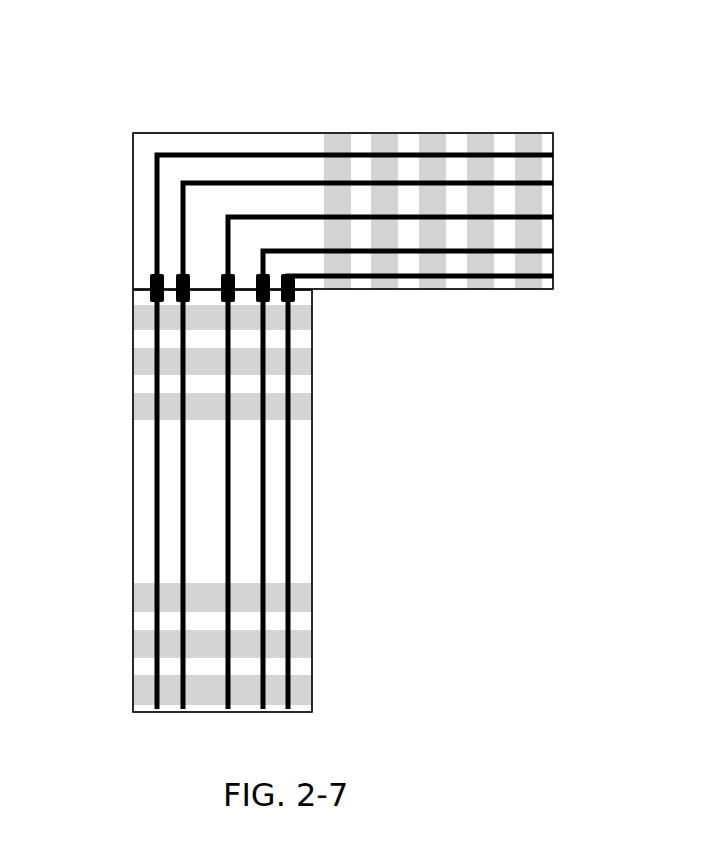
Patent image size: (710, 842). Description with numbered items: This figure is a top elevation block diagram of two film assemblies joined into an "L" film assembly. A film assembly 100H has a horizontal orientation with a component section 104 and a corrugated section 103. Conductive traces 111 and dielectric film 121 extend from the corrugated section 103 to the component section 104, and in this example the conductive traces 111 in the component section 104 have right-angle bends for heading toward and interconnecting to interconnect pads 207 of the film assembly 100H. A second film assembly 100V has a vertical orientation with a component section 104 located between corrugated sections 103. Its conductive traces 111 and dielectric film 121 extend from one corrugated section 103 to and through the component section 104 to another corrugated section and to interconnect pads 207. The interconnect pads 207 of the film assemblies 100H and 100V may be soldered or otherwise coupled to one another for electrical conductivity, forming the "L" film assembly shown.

The film assembly 100H is at (586, 112).
The film assembly 100V is at (334, 590).
The corrugated section 103 is at (118, 708).
The component section 104 is at (118, 565).
The conductive traces 111 is at (553, 217).
The dielectric film 121 is at (553, 143).
The interconnect pads 207 is at (295, 283).